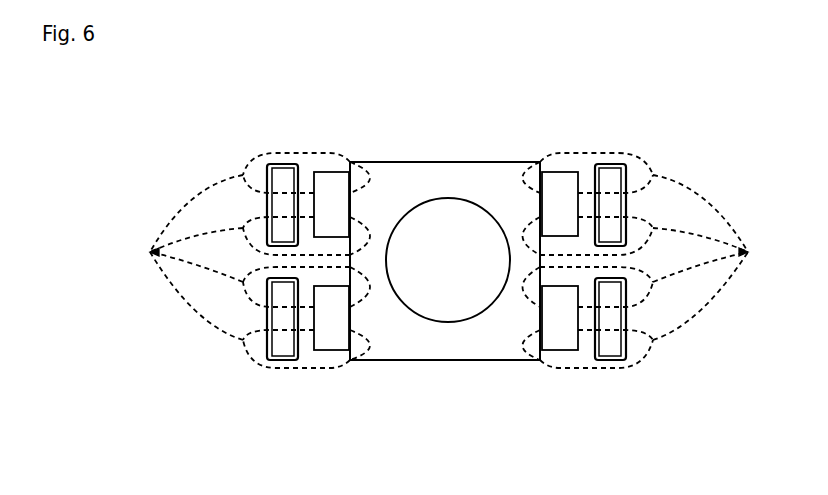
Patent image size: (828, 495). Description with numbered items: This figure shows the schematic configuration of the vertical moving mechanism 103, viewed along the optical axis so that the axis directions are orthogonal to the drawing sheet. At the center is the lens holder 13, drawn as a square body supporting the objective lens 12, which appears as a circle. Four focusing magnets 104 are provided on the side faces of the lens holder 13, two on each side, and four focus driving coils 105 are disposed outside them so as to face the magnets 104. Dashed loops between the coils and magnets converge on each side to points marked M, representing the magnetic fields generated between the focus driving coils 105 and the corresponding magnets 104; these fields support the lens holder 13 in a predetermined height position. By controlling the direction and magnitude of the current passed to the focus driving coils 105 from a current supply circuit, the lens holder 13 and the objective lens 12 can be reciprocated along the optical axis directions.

The objective lens 12 is at (450, 198).
The lens holder 13 is at (510, 162).
The vertical moving mechanism 103 is at (677, 116).
The focusing magnet 104 is at (340, 172).
The focus driving coil 105 is at (283, 164).